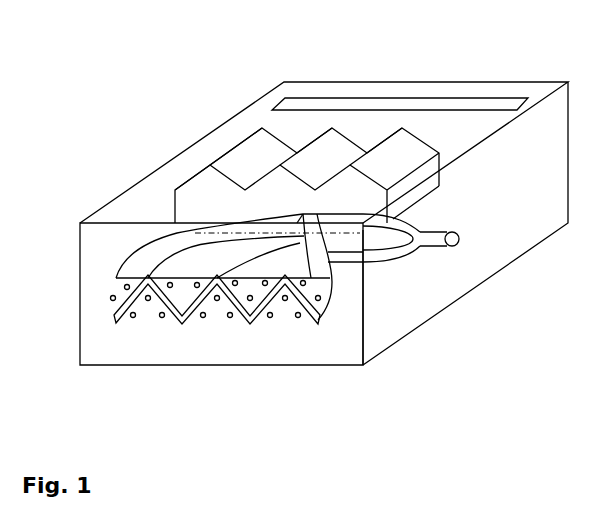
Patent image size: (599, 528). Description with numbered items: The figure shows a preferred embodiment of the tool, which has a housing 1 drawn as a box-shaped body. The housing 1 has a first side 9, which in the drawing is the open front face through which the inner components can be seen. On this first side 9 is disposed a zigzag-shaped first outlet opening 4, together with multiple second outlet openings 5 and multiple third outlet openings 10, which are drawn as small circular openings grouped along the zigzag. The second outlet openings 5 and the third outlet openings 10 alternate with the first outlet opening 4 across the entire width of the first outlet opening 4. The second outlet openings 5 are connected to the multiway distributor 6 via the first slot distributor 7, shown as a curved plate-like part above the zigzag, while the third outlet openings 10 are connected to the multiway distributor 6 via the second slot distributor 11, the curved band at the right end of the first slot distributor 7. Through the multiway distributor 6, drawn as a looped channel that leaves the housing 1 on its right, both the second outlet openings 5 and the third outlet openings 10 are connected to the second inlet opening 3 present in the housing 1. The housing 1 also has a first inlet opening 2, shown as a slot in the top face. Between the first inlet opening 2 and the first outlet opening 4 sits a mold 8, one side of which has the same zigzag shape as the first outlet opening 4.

The housing 1 is at (487, 283).
The first inlet opening 2 is at (462, 103).
The second inlet opening 3 is at (460, 243).
The first outlet opening 4 is at (112, 310).
The second outlet openings 5 is at (110, 297).
The multiway distributor 6 is at (420, 255).
The first slot distributor 7 is at (148, 247).
The mold 8 is at (237, 158).
The first side 9 is at (340, 356).
The third outlet openings 10 is at (113, 326).
The second slot distributor 11 is at (337, 290).